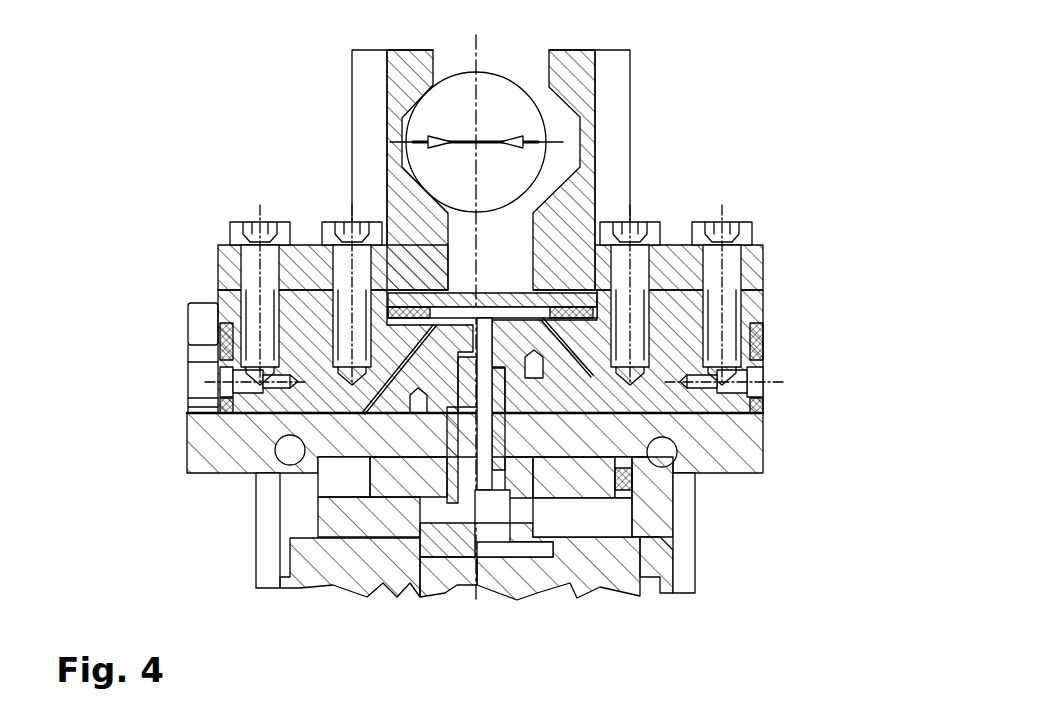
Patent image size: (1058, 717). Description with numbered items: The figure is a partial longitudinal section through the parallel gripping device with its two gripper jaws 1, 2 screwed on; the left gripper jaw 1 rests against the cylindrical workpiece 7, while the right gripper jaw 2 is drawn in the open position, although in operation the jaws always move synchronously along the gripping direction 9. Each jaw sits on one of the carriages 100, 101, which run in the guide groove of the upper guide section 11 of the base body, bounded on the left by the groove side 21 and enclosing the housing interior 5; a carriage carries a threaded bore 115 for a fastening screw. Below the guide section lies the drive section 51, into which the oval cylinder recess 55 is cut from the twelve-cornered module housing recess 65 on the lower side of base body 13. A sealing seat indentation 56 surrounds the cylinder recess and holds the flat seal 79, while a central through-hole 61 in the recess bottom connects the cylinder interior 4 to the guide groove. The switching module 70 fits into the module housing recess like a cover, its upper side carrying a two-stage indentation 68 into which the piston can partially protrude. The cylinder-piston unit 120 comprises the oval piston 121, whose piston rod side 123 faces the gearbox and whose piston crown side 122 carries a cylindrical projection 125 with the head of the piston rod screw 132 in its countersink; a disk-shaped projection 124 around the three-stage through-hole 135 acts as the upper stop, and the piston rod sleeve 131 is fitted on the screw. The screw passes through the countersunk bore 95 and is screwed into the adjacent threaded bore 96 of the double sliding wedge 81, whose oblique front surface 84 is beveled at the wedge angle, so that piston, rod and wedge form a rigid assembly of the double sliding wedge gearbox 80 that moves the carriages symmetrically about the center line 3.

The gripper jaw 1 is at (397, 93).
The gripper jaw 2 is at (583, 93).
The center line 3 is at (476, 185).
The cylinder interior 4 is at (430, 493).
The housing interior 5 is at (257, 232).
The workpiece 7 is at (420, 128).
The gripping direction 9 is at (645, 125).
The guide section 11 is at (183, 297).
The lower side of base body 13 is at (676, 590).
The groove side 21 is at (205, 322).
The drive section 51 is at (187, 453).
The cylinder recess 55 is at (635, 522).
The sealing seat indentation 56 is at (171, 530).
The through-hole 61 is at (684, 404).
The module housing recess 65 is at (682, 578).
The indentation 68 is at (525, 555).
The switching module 70 is at (305, 556).
The flat seal 79 is at (660, 562).
The double sliding wedge gearbox 80 is at (337, 414).
The double sliding wedge 81 is at (649, 314).
The front surface 84 is at (675, 365).
The countersunk bore 95 is at (240, 385).
The threaded bore 96 is at (226, 368).
The carriage 100 is at (310, 343).
The carriage 101 is at (757, 368).
The threaded bore 115 is at (552, 406).
The cylinder-piston unit 120 is at (655, 498).
The piston 121 is at (622, 650).
The piston crown side 122 is at (533, 482).
The piston rod side 123 is at (343, 476).
The projection 124 is at (410, 480).
The projection 125 is at (432, 543).
The piston rod sleeve 131 is at (372, 442).
The piston rod screw 132 is at (498, 515).
The through-hole 135 is at (408, 545).